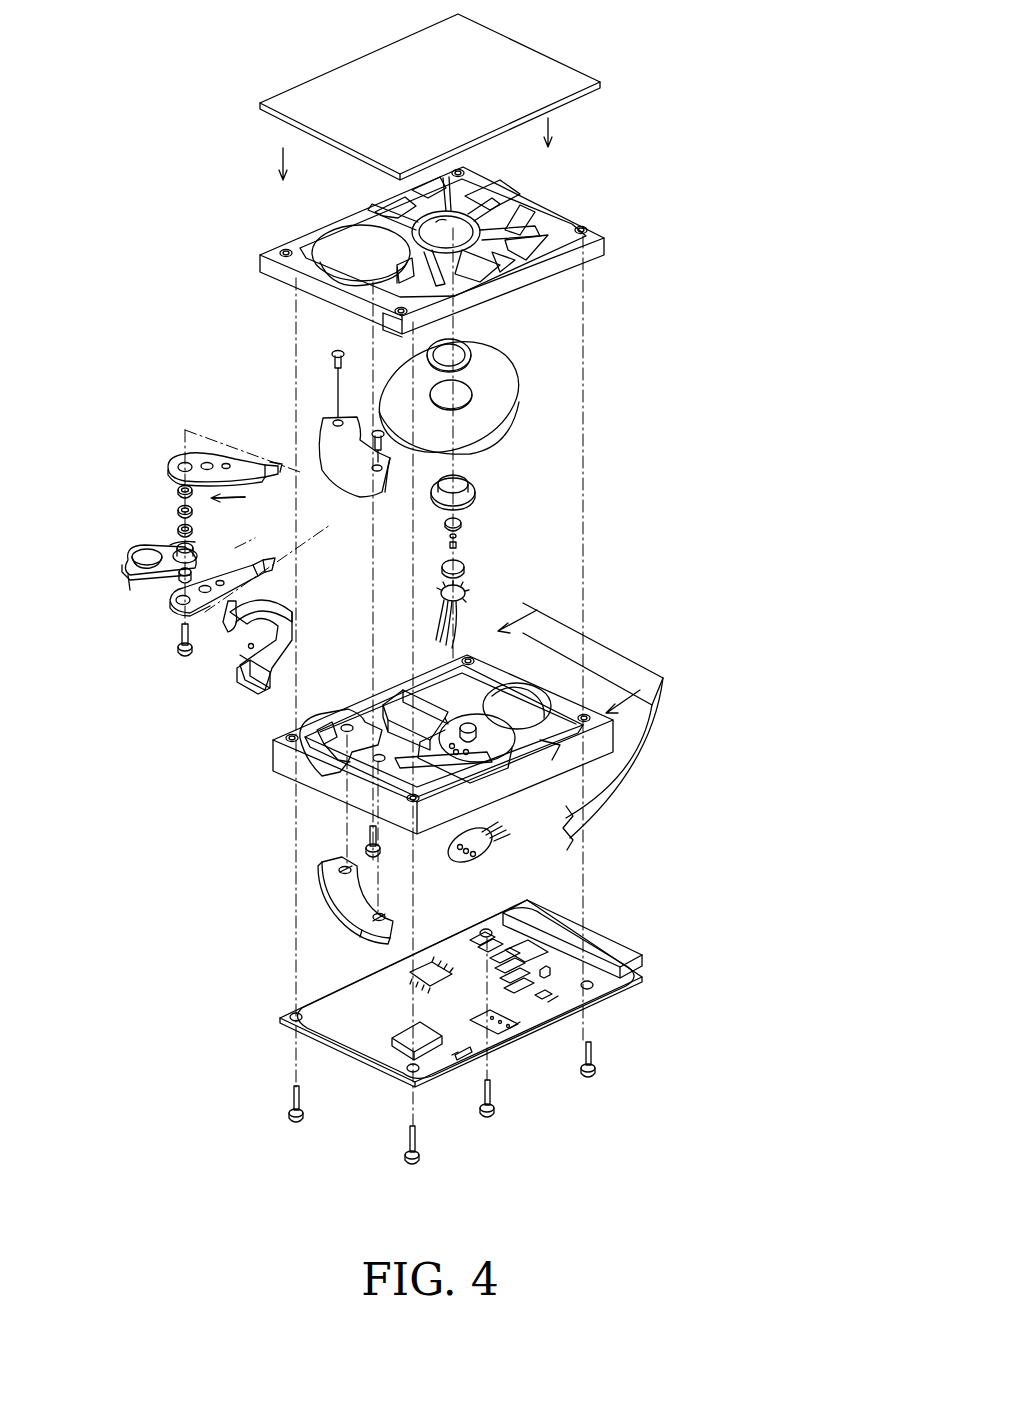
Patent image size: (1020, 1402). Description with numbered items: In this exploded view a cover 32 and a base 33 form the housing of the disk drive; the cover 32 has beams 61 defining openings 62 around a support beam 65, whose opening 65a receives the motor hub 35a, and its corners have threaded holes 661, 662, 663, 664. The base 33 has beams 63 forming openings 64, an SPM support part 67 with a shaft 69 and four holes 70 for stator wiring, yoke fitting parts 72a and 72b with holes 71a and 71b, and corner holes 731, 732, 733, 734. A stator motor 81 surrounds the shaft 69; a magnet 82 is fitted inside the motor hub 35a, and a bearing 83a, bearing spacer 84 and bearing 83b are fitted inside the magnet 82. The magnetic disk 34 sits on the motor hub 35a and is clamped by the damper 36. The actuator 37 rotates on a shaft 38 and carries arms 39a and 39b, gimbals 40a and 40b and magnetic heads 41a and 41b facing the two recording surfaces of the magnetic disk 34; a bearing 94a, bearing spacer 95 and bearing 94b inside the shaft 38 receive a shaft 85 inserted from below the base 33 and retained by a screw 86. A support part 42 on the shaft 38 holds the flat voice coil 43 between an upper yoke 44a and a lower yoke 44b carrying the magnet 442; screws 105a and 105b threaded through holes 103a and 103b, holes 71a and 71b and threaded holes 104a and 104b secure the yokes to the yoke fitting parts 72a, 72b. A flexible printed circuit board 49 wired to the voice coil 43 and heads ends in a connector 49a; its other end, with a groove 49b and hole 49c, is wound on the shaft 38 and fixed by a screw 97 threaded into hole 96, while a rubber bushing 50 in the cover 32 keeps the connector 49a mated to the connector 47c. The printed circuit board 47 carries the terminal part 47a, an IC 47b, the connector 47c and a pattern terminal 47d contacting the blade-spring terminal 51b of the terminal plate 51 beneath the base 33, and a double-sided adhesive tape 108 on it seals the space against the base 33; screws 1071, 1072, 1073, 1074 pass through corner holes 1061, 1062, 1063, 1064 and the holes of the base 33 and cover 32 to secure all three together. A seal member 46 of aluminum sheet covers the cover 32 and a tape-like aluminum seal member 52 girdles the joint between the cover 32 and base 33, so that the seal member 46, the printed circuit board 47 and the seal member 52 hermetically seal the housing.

The upper housing 32 is at (441, 248).
The base housing 33 is at (453, 748).
The disk 34 is at (507, 385).
The hub 35a is at (472, 480).
The disk ring 36 is at (467, 346).
The arm rotation direction 37 is at (244, 488).
The arm shaft 38 is at (162, 545).
The upper arm 39a is at (193, 456).
The lower arm 39b is at (235, 575).
The upper arm tip 40a is at (255, 462).
The lower arm tip 40b is at (262, 567).
The upper head 41a is at (270, 466).
The lower head 41b is at (272, 565).
The cam member 42 is at (125, 556).
The cam follower 43 is at (130, 582).
The upper bracket 44a is at (378, 480).
The lower bracket 442 is at (311, 914).
The bracket portion 44b is at (355, 930).
The top cover plate 46 is at (605, 82).
The printed circuit board 47 is at (467, 1019).
The connector 47a is at (620, 952).
The circuit component 47b is at (525, 966).
The circuit component 47c is at (455, 1060).
The circuit component 47d is at (511, 1040).
The latch member 49 is at (231, 655).
The latch block 49a is at (240, 686).
The latch hook 49b is at (224, 615).
The latch pin 49c is at (248, 648).
The housing tab 50 is at (396, 268).
The coil 51 is at (514, 858).
The coil leads 51b is at (486, 860).
The flexible cover 52 is at (630, 760).
The central ring 61 is at (585, 236).
The wedge rib 62 is at (525, 250).
The guide block 63 is at (450, 690).
The spindle boss 64 is at (480, 722).
The rib 65 is at (500, 262).
The rib opening 65a is at (478, 222).
The screw hole 661 is at (464, 172).
The screw hole 662 is at (587, 229).
The screw hole 663 is at (399, 322).
The screw hole 664 is at (280, 255).
The motor recess 67 is at (548, 690).
The recess edge 69 is at (530, 752).
The motor platform 70 is at (480, 756).
The boss 71a is at (347, 706).
The boss 71b is at (350, 770).
The recess 72a is at (320, 740).
The bar 72b is at (480, 770).
The screw hole 731 is at (482, 660).
The screw hole 732 is at (592, 718).
The screw hole 733 is at (420, 802).
The screw hole 734 is at (285, 738).
The stator coil 81 is at (466, 592).
The rotor magnet 82 is at (465, 567).
The bearing 83a is at (462, 521).
The bearing 83b is at (458, 545).
The spacer 84 is at (457, 536).
The screw 85 is at (178, 648).
The screw 86 is at (380, 850).
The washer 94a is at (178, 508).
The washer 94b is at (178, 527).
The spacer ring 95 is at (178, 488).
The pivot boss 96 is at (197, 565).
The spring 97 is at (240, 672).
The screw 103a is at (334, 420).
The screw 103b is at (383, 468).
The screw hole 104a is at (330, 866).
The screw hole 104b is at (374, 925).
The screw 105a is at (332, 352).
The screw 105b is at (318, 410).
The board hole 1061 is at (480, 938).
The board hole 1062 is at (593, 987).
The board hole 1063 is at (408, 1072).
The board hole 1064 is at (290, 1022).
The screw 1071 is at (493, 1112).
The screw 1072 is at (596, 1070).
The screw 1073 is at (418, 1160).
The screw 1074 is at (290, 1122).
The board hole 108 is at (555, 1002).